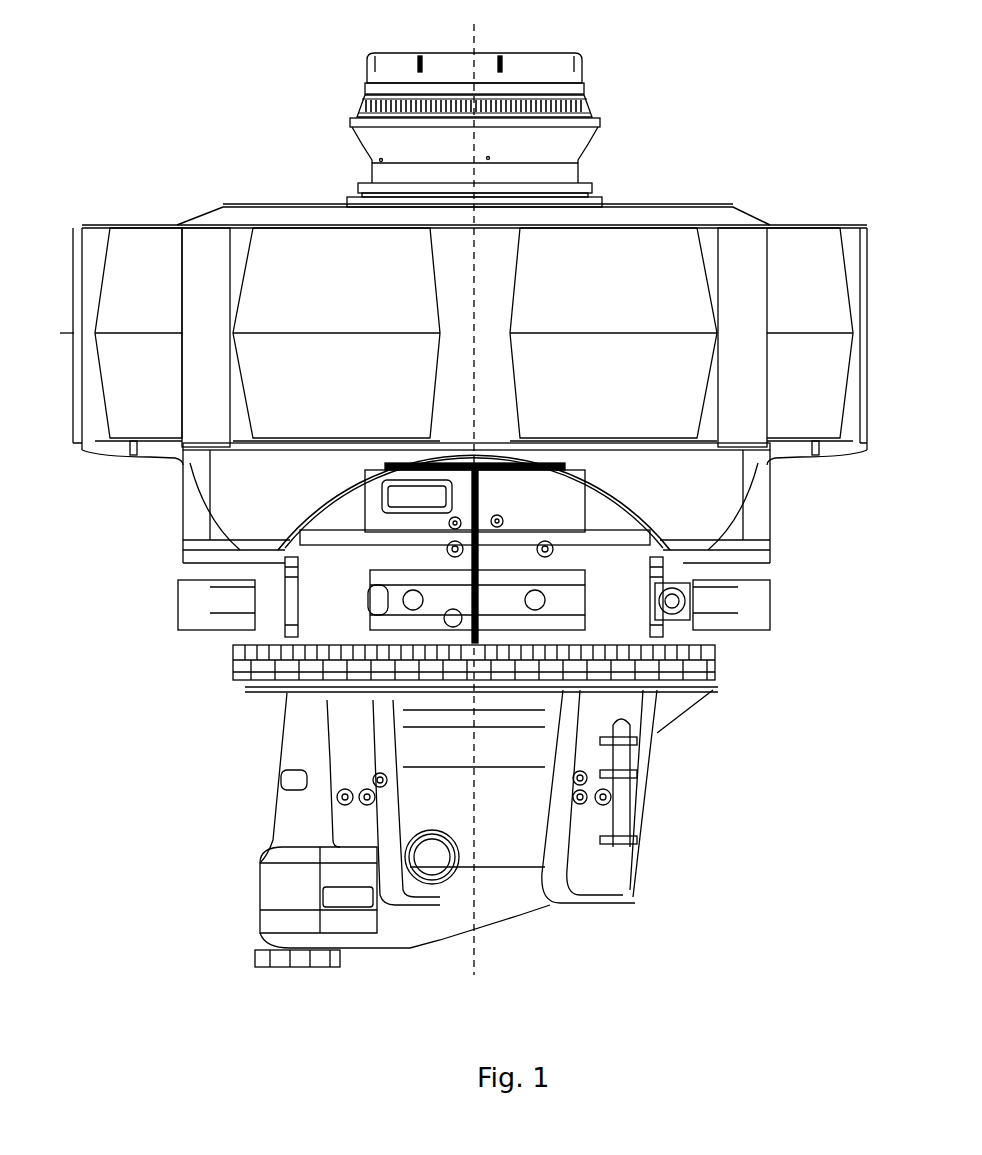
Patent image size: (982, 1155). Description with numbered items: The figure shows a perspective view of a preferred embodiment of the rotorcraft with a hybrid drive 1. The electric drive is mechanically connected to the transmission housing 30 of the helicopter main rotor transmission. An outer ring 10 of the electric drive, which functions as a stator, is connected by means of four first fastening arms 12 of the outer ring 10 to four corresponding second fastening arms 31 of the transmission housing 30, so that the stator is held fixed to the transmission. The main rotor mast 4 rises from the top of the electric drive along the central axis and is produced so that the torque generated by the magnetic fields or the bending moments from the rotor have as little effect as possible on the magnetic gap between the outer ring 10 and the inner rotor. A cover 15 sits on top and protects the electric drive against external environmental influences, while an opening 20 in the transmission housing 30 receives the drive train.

The hybrid drive 1 is at (786, 170).
The main rotor mast 4 is at (612, 94).
The outer ring 10 is at (143, 268).
The first fastening arm 12 is at (295, 530).
The cover 15 is at (653, 208).
The opening 20 is at (432, 862).
The transmission housing 30 is at (315, 736).
The second fastening arm 31 is at (215, 600).